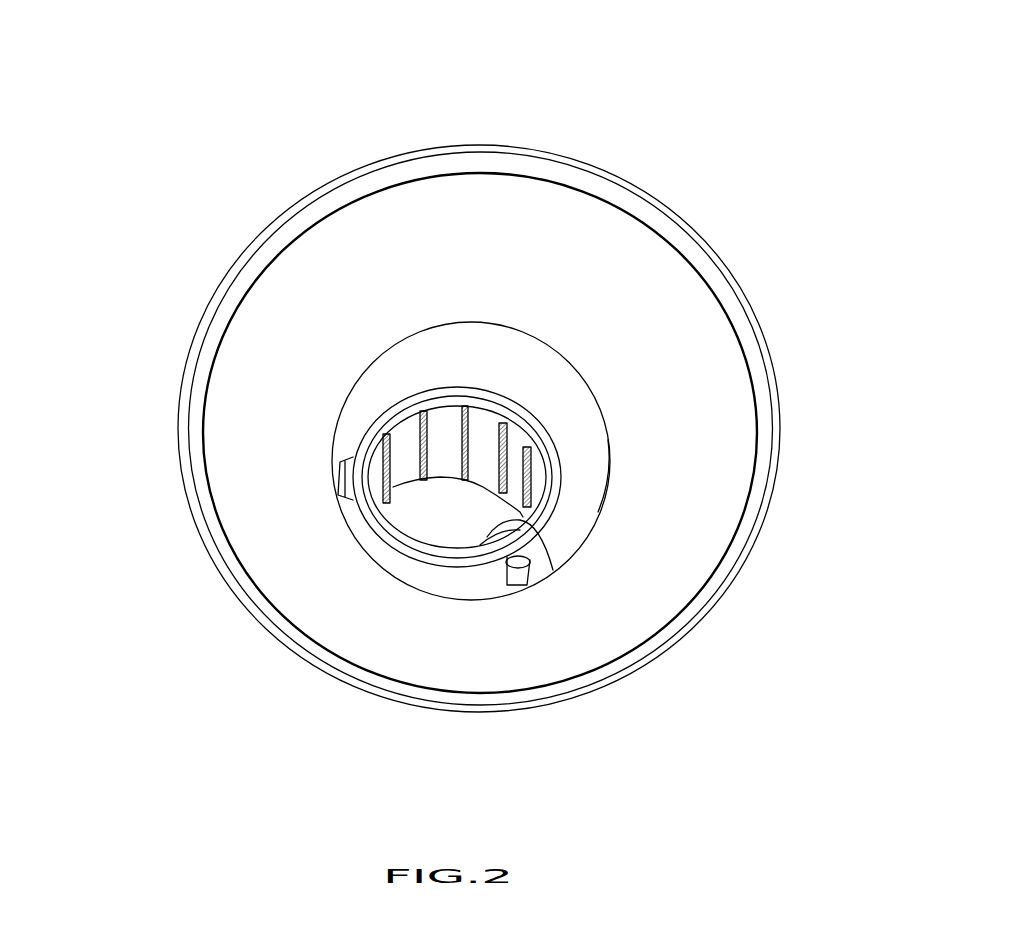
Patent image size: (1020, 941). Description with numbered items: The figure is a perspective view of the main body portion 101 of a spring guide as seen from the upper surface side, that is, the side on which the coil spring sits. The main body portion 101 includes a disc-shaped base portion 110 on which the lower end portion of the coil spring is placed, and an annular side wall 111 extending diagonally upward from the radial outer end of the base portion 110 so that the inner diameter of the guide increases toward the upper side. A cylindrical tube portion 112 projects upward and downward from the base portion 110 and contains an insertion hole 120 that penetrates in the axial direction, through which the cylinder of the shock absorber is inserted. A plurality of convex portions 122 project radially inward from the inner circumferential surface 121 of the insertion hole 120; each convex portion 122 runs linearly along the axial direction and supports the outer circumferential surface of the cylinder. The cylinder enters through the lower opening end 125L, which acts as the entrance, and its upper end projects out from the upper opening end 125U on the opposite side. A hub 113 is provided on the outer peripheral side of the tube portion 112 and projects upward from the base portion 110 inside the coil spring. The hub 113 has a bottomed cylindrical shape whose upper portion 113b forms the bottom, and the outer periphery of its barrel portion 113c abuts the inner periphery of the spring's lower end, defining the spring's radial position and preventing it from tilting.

The main body portion 101 is at (187, 108).
The base portion 110 is at (333, 600).
The side wall 111 is at (318, 190).
The tube portion 112 is at (353, 513).
The hub 113 is at (570, 360).
The upper portion 113b is at (483, 353).
The barrel portion 113c is at (605, 485).
The insertion hole 120 is at (483, 540).
The inner circumferential surface 121 is at (438, 420).
The convex portions 122 is at (422, 445).
The lower opening end 125L is at (413, 487).
The upper opening end 125U is at (553, 570).